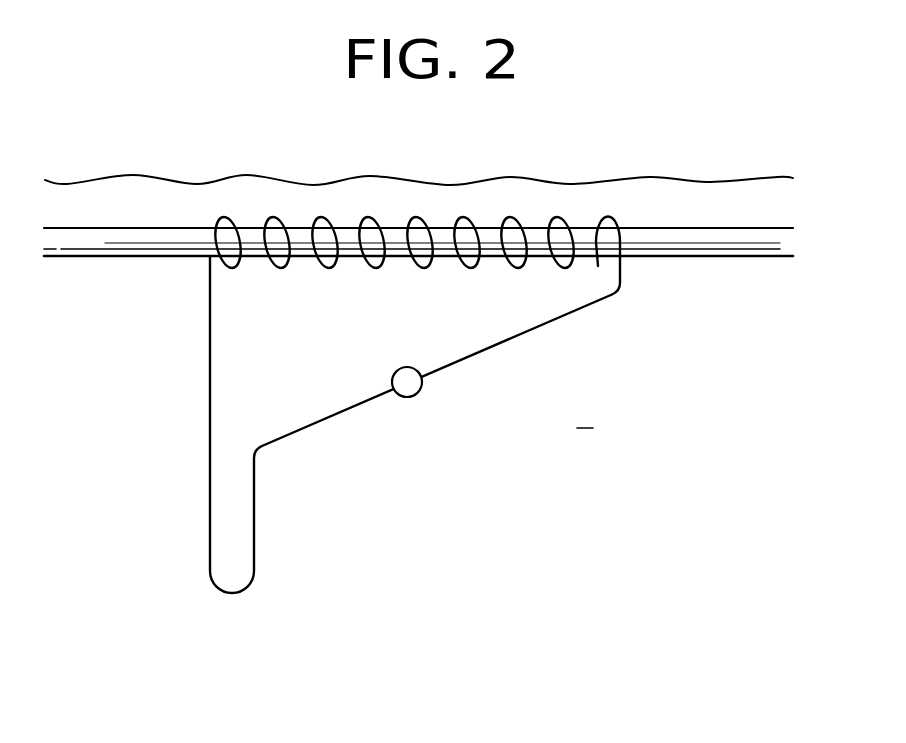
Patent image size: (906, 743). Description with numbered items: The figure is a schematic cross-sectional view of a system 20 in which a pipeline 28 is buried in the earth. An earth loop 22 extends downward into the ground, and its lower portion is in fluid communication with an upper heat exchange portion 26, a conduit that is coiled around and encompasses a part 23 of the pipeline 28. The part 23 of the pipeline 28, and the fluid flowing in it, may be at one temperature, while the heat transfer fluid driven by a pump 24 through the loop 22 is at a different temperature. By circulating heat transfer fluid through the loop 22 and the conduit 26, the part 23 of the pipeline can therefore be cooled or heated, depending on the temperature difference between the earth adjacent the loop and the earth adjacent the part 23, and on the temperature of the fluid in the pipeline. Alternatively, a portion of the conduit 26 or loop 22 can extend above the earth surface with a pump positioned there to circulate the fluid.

The system 20 is at (590, 151).
The earth loop 22 is at (210, 485).
The part of the pipeline 23 is at (388, 228).
The pump 24 is at (408, 390).
The upper heat exchange portion 26 is at (268, 217).
The pipeline 28 is at (740, 228).